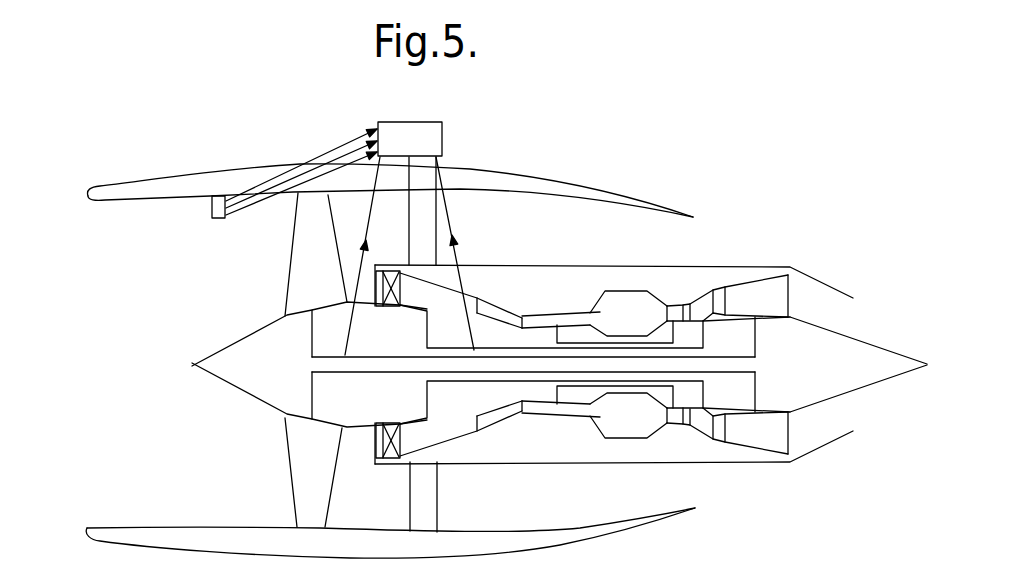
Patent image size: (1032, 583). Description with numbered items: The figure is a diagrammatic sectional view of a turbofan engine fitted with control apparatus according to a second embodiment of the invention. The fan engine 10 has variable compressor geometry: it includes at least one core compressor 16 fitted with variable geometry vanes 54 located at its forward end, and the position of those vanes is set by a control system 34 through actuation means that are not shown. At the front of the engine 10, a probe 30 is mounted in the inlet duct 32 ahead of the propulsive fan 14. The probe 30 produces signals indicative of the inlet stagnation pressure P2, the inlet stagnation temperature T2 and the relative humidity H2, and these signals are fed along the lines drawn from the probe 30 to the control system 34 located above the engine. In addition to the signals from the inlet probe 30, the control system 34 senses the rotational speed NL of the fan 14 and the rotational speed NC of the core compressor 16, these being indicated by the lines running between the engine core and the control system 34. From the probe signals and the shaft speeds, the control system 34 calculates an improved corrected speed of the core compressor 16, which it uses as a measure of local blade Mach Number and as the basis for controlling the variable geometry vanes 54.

The fan engine 10 is at (595, 157).
The propulsive fan 14 is at (302, 458).
The core compressor 16 is at (383, 465).
The probe 30 is at (210, 212).
The inlet duct 32 is at (168, 440).
The control system 34 is at (433, 137).
The variable geometry vanes 54 is at (400, 433).
The inlet stagnation temperature T2 is at (277, 183).
The relative humidity H2 is at (350, 160).
The inlet stagnation pressure P2 is at (245, 187).
The rotational speed of the fan NL is at (370, 217).
The rotational speed of the core compressor NC is at (447, 215).